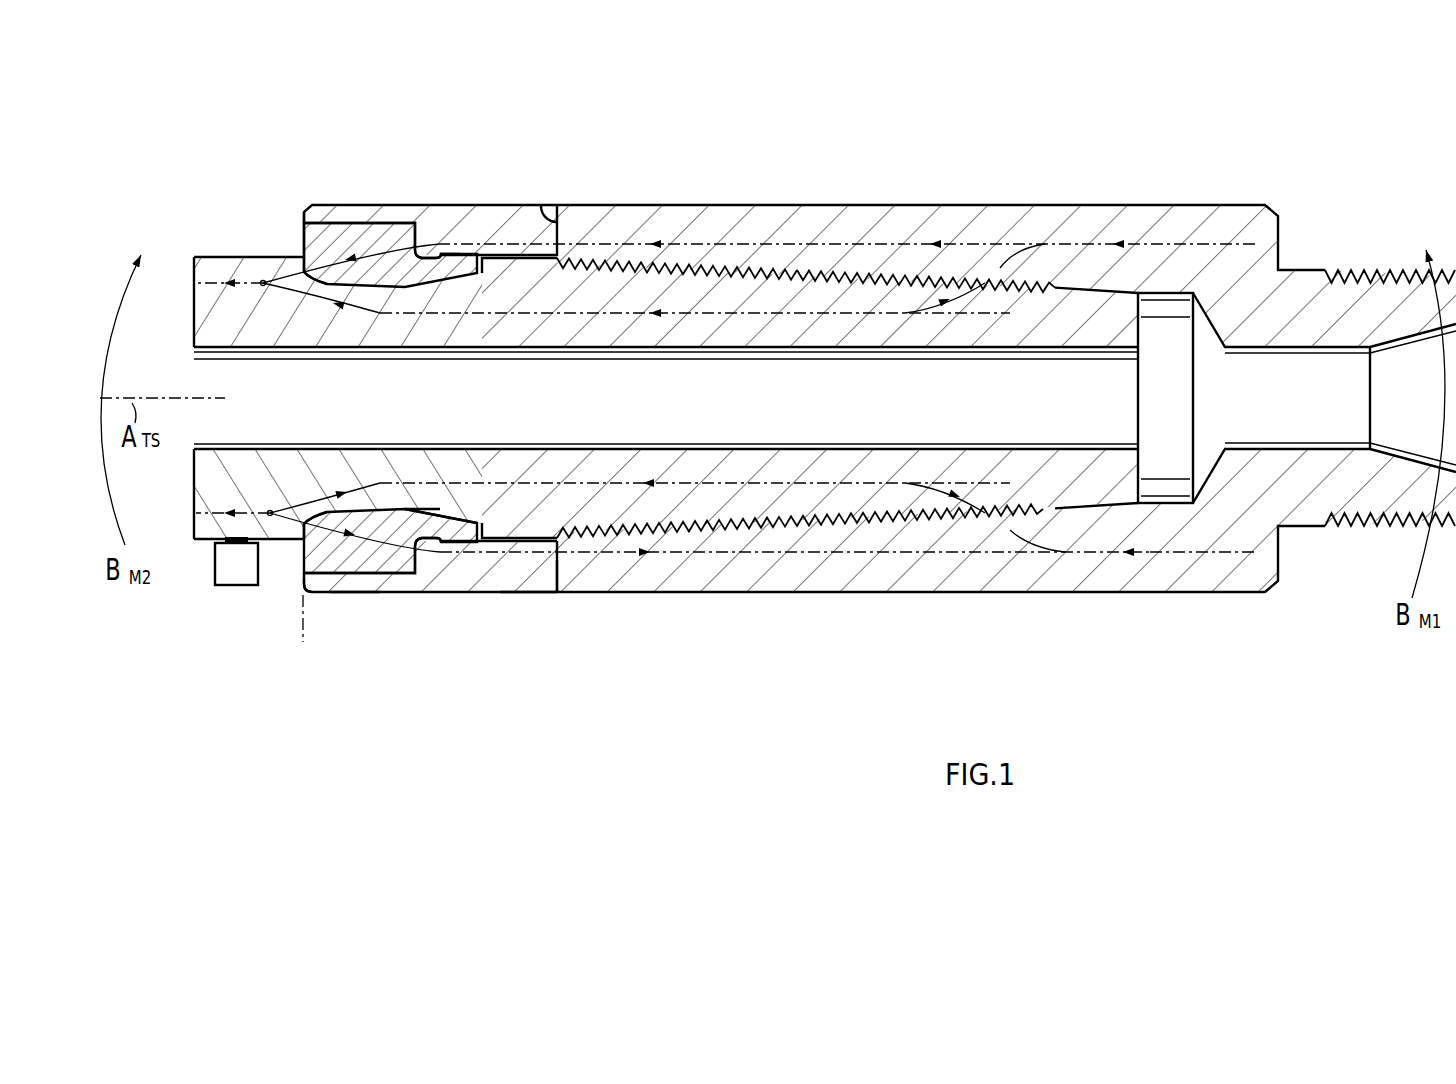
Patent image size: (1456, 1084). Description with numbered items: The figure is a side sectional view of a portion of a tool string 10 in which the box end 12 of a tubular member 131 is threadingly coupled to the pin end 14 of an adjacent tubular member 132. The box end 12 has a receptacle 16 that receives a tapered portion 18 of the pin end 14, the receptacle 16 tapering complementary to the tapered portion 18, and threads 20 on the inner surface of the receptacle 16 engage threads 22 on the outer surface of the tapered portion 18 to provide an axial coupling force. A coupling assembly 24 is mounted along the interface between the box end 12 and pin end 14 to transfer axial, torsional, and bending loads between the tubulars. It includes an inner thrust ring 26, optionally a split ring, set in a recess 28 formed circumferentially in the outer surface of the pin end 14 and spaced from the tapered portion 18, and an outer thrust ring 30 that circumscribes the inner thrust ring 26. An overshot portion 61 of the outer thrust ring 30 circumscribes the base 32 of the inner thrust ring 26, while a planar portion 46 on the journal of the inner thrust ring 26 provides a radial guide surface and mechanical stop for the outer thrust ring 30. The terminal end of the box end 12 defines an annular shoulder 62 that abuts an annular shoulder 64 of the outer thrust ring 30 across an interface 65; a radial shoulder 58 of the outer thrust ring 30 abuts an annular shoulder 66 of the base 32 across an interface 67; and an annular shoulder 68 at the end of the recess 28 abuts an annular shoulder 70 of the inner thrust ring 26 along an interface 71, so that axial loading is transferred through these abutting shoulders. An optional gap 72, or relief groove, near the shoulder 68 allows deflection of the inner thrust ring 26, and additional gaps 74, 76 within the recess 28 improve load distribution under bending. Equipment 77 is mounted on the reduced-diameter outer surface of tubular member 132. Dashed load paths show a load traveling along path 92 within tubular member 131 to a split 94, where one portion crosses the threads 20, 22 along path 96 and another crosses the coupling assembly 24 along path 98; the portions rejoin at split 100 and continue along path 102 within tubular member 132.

The tool string 10 is at (1317, 588).
The box end 12 is at (1166, 222).
The tubular member 131 is at (1342, 230).
The tubular member 132 is at (231, 216).
The pin end 14 is at (268, 255).
The receptacle 16 is at (1021, 500).
The tapered portion 18 is at (632, 262).
The threads 20 is at (768, 268).
The threads 22 is at (771, 525).
The coupling assembly 24 is at (415, 603).
The inner thrust ring 26 is at (297, 555).
The recess 28 is at (321, 512).
The outer thrust ring 30 is at (526, 601).
The base 32 is at (353, 236).
The planar portion 46 is at (452, 516).
The radial shoulder 58 is at (430, 550).
The overshot portion 61 is at (358, 589).
The annular shoulder 62 is at (567, 562).
The annular shoulder 64 is at (548, 208).
The interface 65 is at (563, 600).
The annular shoulder 66 is at (392, 247).
The interface 67 is at (407, 534).
The annular shoulder 68 is at (303, 518).
The annular shoulder 70 is at (292, 242).
The interface 71 is at (296, 632).
The gap 72 is at (320, 284).
The gap 74 is at (489, 528).
The gap 76 is at (435, 240).
The equipment 77 is at (211, 591).
The path 92 is at (1203, 553).
The split 94 is at (1062, 560).
The path 96 is at (785, 479).
The path 98 is at (893, 553).
The split 100 is at (262, 290).
The path 102 is at (226, 280).